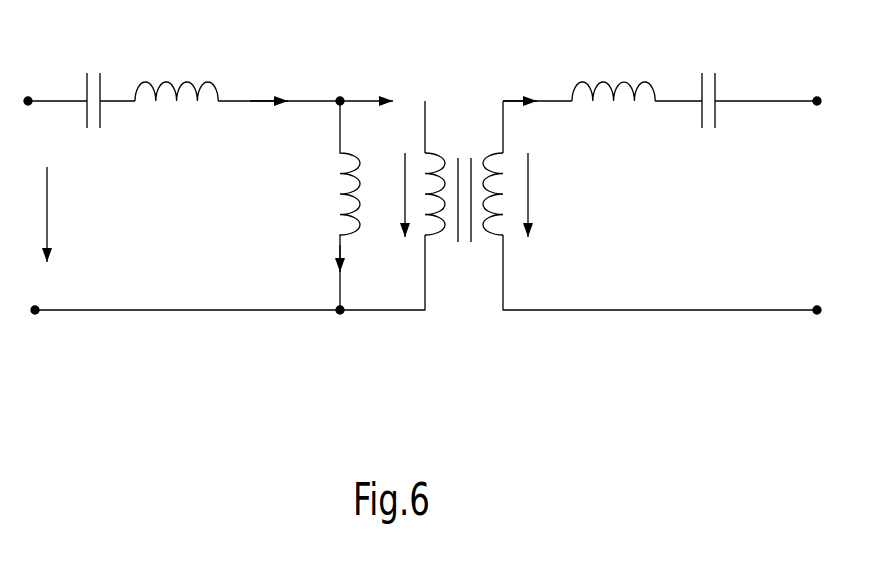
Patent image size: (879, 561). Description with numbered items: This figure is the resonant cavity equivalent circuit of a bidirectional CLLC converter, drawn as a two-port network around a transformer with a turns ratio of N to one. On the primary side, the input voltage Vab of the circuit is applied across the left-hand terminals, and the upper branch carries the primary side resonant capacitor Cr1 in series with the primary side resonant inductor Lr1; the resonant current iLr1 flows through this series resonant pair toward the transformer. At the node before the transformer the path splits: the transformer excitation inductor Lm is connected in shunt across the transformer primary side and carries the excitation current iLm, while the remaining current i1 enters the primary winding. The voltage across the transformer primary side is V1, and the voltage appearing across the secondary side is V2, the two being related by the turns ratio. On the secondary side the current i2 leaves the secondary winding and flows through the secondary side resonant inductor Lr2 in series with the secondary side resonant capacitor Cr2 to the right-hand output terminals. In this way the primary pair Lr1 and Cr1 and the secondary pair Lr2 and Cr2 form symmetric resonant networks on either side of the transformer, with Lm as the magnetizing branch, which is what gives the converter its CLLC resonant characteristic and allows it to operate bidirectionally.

The primary side resonant capacitor Cr1 is at (91, 85).
The primary side resonant inductor Lr1 is at (176, 72).
The resonant current iLr1 is at (275, 77).
The transformer primary side current i1 is at (366, 80).
The transformer excitation inductor Lm is at (330, 205).
The excitation current iLm is at (316, 263).
The transformer primary side voltage V1 is at (390, 195).
The transformer secondary side voltage V2 is at (548, 195).
The transformer secondary side current i2 is at (522, 80).
The secondary side resonant inductor Lr2 is at (613, 68).
The secondary side resonant capacitor Cr2 is at (704, 81).
The input voltage Vab is at (71, 214).